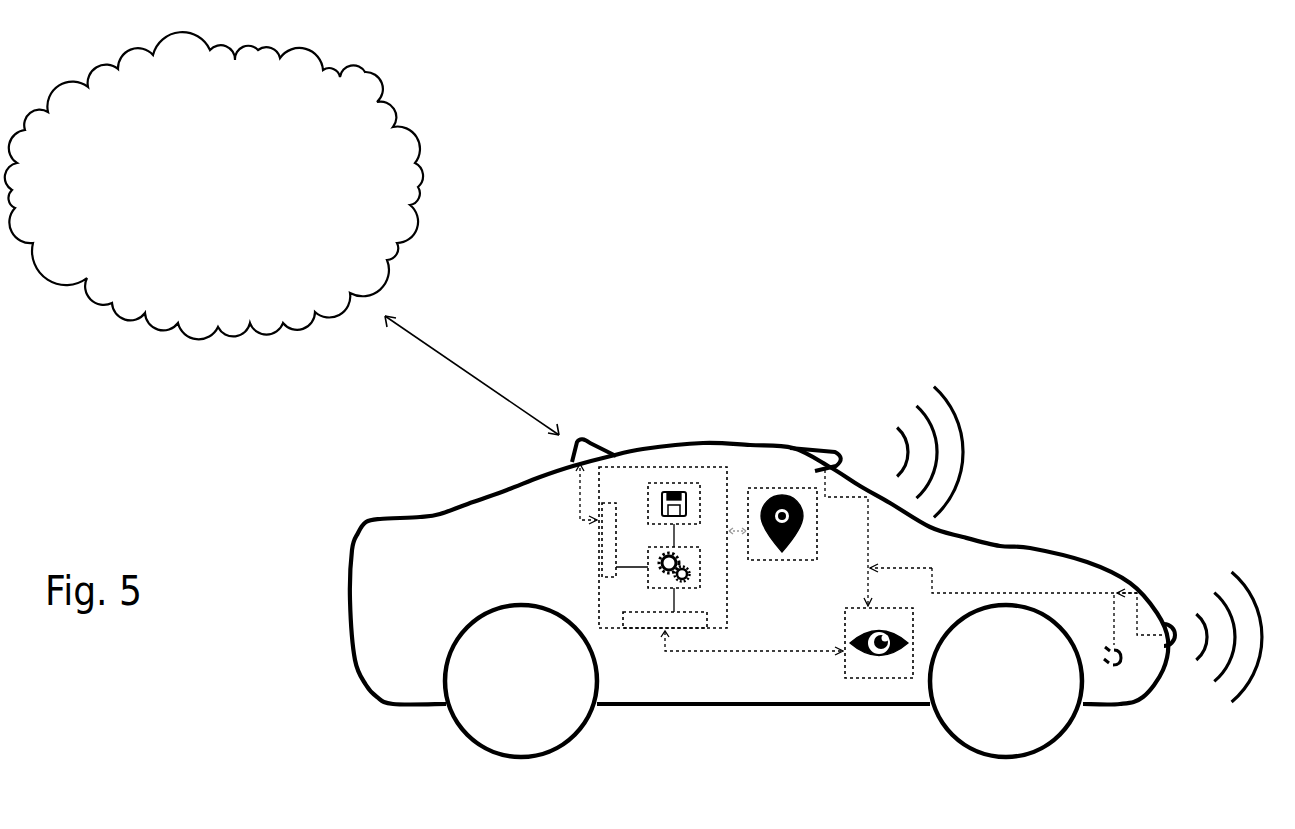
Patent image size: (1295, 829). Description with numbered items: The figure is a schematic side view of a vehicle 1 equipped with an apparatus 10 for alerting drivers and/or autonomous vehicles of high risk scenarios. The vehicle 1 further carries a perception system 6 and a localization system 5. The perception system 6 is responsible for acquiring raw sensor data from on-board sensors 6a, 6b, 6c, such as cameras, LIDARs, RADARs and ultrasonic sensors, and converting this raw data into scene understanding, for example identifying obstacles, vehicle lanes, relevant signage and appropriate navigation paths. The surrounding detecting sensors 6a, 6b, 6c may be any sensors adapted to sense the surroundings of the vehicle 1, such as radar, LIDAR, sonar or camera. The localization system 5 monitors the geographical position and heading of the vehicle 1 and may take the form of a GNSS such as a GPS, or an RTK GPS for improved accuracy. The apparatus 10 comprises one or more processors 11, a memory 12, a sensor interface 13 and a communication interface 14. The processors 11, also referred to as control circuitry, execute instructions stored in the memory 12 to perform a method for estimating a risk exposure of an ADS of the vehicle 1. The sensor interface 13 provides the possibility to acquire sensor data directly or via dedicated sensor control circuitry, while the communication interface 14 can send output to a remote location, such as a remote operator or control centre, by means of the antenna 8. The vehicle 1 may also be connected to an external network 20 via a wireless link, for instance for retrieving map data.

The vehicle 1 is at (373, 702).
The localization system 5 is at (760, 488).
The perception system 6 is at (893, 680).
The surrounding detecting sensor 6a is at (1119, 663).
The surrounding detecting sensor 6b is at (1173, 626).
The surrounding detecting sensor 6c is at (828, 446).
The antenna 8 is at (590, 438).
The apparatus 10 is at (652, 516).
The processor 11 is at (700, 571).
The memory 12 is at (673, 485).
The sensor interface 13 is at (648, 623).
The communication interface 14 is at (605, 552).
The external network 20 is at (366, 73).